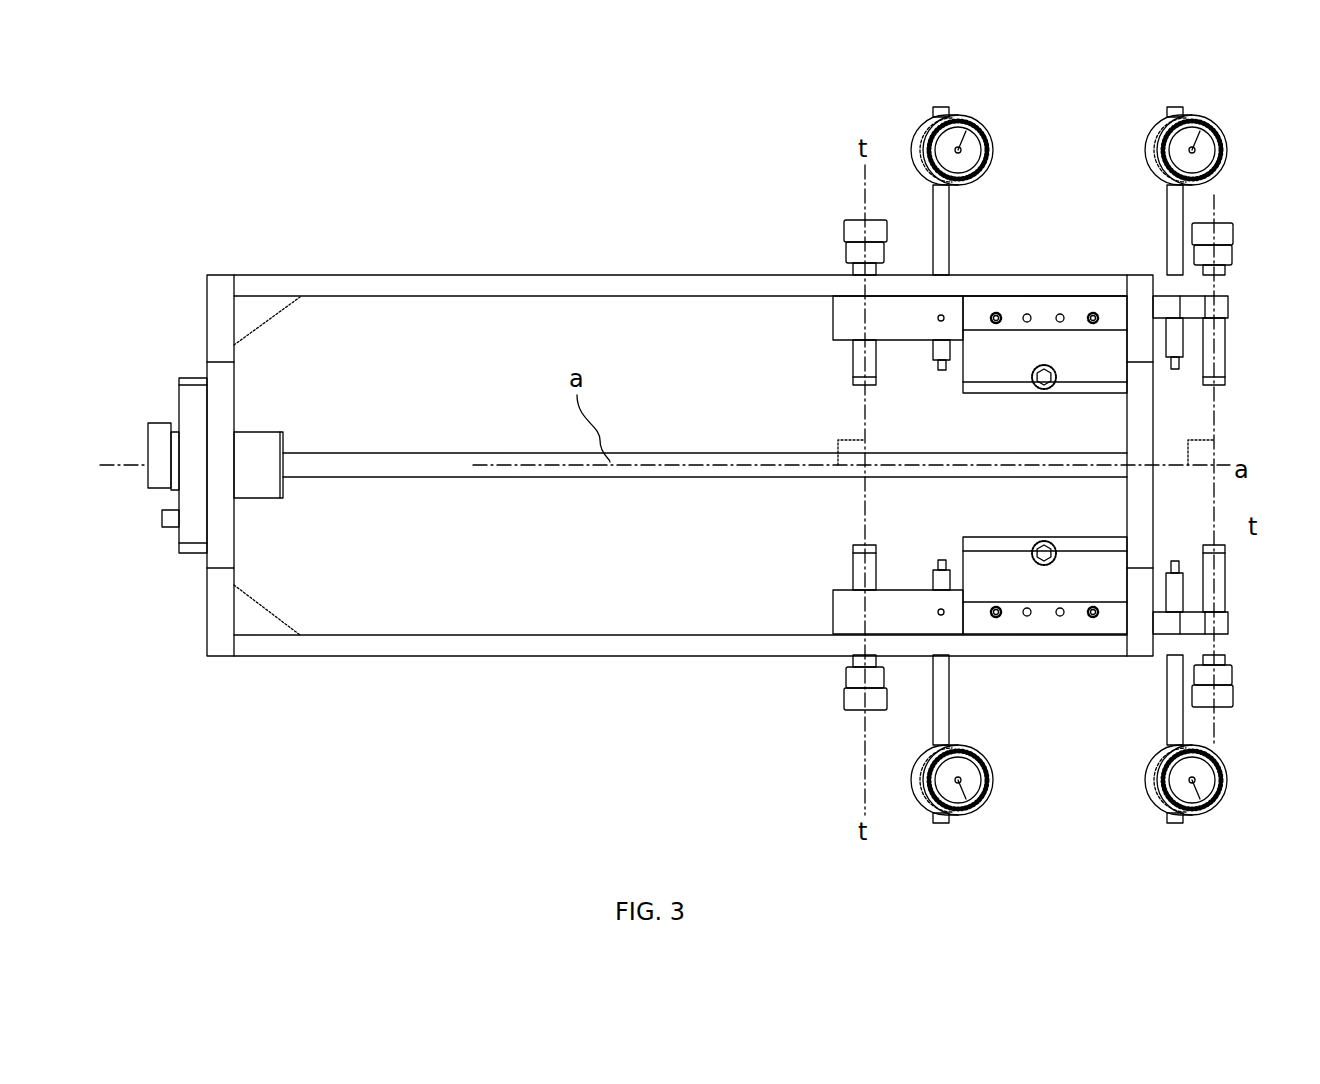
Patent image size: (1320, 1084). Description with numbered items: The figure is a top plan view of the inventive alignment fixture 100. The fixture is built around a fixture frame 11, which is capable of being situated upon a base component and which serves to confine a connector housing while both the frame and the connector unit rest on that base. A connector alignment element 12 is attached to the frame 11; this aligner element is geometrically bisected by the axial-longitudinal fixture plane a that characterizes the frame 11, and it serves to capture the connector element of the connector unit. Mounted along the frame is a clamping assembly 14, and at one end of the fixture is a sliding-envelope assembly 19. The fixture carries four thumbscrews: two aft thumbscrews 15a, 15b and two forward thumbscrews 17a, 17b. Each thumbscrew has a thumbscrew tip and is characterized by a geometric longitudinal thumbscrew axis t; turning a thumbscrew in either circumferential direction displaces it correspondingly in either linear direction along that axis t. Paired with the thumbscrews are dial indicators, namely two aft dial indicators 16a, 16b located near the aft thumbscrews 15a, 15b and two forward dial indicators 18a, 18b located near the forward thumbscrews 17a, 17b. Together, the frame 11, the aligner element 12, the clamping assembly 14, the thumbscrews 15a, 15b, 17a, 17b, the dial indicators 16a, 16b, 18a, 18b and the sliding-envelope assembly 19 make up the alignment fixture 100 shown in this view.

The alignment fixture 100 is at (542, 775).
The fixture frame 11 is at (421, 646).
The connector alignment element 12 is at (255, 440).
The clamping assembly 14 is at (1046, 340).
The aft thumbscrew 15a is at (1220, 700).
The aft thumbscrew 15b is at (1235, 233).
The aft dial indicator 16a is at (1183, 823).
The aft dial indicator 16b is at (1165, 110).
The forward thumbscrew 17a is at (848, 700).
The forward thumbscrew 17b is at (855, 232).
The forward dial indicator 18a is at (955, 823).
The forward dial indicator 18b is at (935, 110).
The sliding-envelope assembly 19 is at (187, 527).